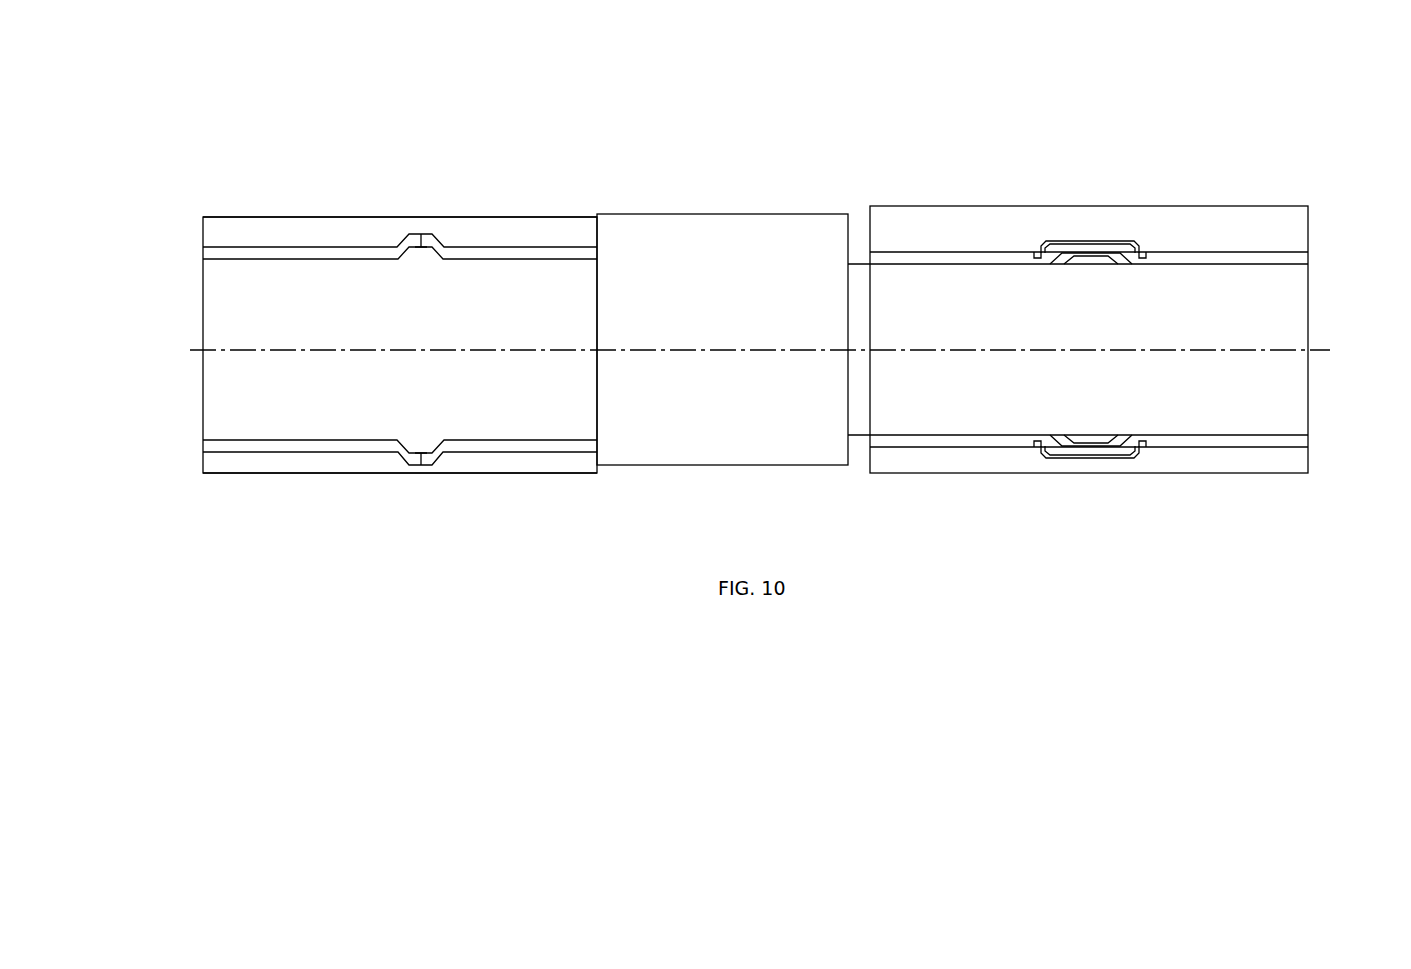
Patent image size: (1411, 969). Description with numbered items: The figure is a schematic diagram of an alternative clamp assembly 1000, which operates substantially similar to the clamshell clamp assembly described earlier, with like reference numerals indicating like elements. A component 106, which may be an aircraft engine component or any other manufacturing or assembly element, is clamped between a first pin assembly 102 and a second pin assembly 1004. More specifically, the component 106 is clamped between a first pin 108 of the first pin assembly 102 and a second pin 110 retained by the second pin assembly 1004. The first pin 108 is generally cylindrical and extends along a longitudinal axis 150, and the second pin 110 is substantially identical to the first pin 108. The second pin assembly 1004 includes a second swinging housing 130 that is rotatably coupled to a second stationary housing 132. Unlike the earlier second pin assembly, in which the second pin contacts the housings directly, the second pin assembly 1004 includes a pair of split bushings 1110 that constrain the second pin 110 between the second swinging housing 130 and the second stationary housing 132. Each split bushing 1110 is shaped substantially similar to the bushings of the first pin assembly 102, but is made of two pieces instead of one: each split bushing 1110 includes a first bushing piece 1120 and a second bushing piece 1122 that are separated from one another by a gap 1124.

The alternative clamp assembly 1000 is at (618, 82).
The first pin assembly 102 is at (1013, 188).
The second pin assembly 1004 is at (441, 200).
The component 106 is at (733, 333).
The first pin 108 is at (1288, 407).
The second pin 110 is at (222, 386).
The second swinging housing 130 is at (230, 232).
The second stationary housing 132 is at (229, 458).
The longitudinal axis 150 is at (198, 350).
The split bushing 1110 is at (194, 231).
The first bushing piece 1120 is at (279, 248).
The second bushing piece 1122 is at (562, 242).
The gap 1124 is at (415, 216).